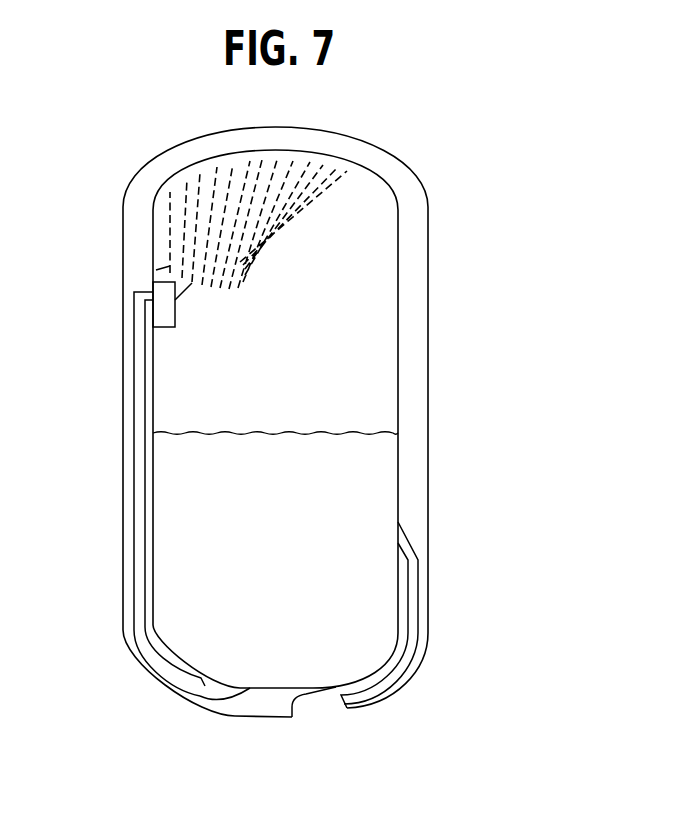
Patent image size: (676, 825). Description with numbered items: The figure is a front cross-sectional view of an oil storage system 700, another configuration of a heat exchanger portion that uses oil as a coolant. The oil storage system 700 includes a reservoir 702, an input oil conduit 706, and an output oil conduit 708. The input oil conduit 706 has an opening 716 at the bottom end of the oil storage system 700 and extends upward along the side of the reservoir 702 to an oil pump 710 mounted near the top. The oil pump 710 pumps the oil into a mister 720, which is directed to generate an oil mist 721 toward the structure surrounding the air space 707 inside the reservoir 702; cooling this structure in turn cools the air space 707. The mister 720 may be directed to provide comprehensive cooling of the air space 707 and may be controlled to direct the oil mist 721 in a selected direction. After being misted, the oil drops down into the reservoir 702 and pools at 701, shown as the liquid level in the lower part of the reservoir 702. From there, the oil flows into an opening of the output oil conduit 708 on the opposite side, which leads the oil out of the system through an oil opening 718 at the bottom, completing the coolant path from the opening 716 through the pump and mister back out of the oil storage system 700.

The oil storage system 700 is at (418, 120).
The pooled oil 701 is at (350, 433).
The reservoir 702 is at (428, 265).
The input oil conduit 706 is at (143, 532).
The air space 707 is at (363, 375).
The output oil conduit 708 is at (412, 591).
The oil pump 710 is at (168, 345).
The opening 716 is at (212, 680).
The oil opening 718 is at (320, 702).
The mister 720 is at (221, 297).
The oil mist 721 is at (303, 220).